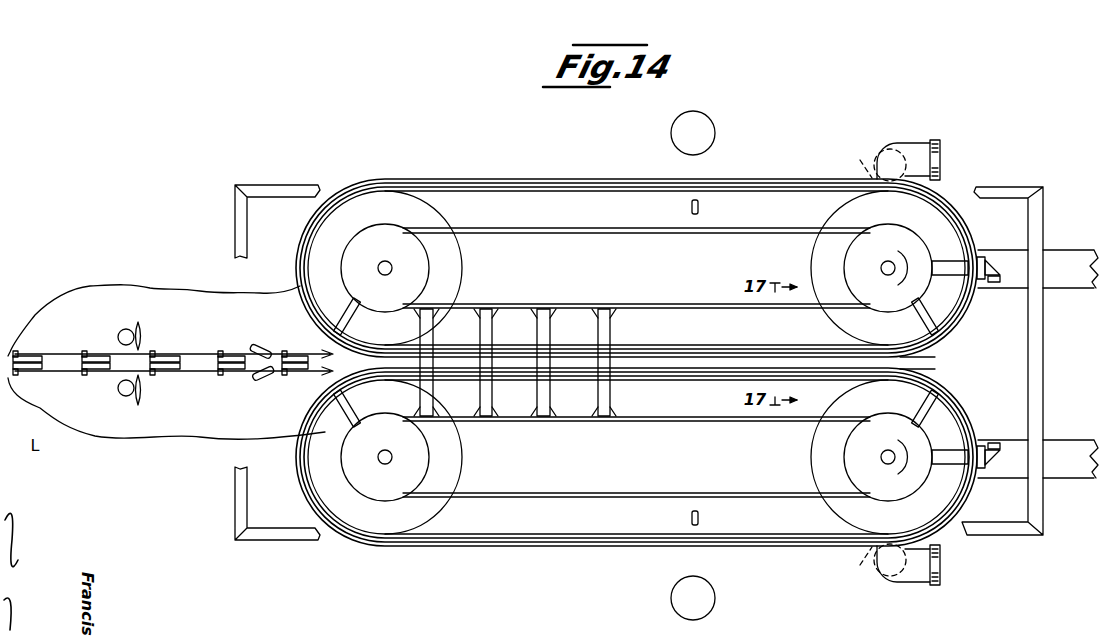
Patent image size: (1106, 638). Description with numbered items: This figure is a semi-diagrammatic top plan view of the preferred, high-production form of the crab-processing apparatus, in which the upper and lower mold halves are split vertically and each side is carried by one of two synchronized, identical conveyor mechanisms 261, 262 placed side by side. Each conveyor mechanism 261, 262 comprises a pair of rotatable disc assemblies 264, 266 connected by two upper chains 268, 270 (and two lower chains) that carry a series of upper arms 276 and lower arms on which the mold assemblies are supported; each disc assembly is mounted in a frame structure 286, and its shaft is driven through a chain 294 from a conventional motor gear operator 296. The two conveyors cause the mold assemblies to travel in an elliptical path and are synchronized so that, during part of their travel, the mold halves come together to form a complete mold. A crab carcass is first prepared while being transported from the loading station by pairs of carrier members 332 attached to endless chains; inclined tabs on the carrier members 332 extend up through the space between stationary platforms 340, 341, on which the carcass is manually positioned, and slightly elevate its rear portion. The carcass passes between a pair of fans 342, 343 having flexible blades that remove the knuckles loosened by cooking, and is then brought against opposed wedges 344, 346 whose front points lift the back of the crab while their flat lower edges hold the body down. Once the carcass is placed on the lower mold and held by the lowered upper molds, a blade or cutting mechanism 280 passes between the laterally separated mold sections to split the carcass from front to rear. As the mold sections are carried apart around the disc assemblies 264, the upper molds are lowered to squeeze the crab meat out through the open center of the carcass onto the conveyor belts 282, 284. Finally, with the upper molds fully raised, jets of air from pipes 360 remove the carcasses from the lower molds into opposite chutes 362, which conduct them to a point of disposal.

The conveyor mechanism 261 is at (737, 172).
The conveyor mechanism 262 is at (590, 542).
The rotatable disc assembly 264 is at (947, 183).
The rotatable disc assembly 266 is at (373, 176).
The upper chain 268 is at (513, 230).
The upper chain 270 is at (590, 235).
The upper arm 276 is at (536, 396).
The blade or cutting mechanism 280 is at (930, 355).
The conveyor belt 282 is at (1058, 284).
The conveyor belt 284 is at (1056, 445).
The frame structure 286 is at (263, 185).
The chain 294 is at (862, 158).
The motor gear operator 296 is at (915, 148).
The carrier member 332 is at (165, 356).
The stationary platform 340 is at (186, 292).
The stationary platform 341 is at (156, 432).
The fan 342 is at (124, 330).
The fan 343 is at (120, 391).
The wedge 344 is at (259, 344).
The wedge 346 is at (262, 382).
The pipe 360 is at (700, 207).
The chute 362 is at (703, 130).